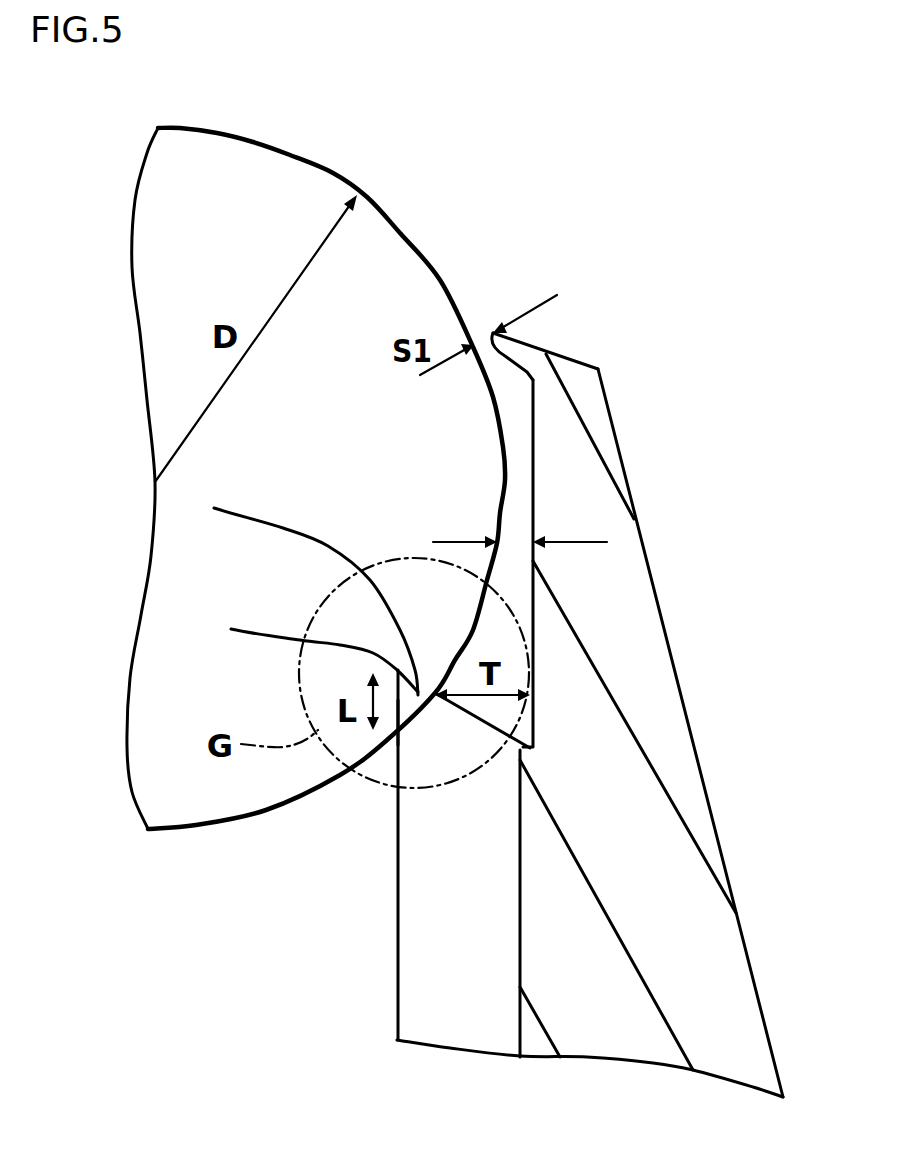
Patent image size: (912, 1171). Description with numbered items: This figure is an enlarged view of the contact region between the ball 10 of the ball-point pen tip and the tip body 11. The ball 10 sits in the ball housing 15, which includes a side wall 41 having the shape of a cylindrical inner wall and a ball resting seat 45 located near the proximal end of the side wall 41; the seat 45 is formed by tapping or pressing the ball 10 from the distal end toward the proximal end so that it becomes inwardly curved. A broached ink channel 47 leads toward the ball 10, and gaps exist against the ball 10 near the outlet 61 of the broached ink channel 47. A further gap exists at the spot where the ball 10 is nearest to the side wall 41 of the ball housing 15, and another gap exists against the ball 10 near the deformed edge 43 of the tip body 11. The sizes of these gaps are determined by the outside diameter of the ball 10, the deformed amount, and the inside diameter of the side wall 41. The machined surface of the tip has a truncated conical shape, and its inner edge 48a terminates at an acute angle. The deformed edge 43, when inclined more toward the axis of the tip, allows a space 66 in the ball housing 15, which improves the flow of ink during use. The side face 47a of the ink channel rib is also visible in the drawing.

The ball 10 is at (240, 175).
The tip body 11 is at (712, 935).
The ball housing 15 is at (516, 506).
The side wall 41 is at (534, 452).
The deformed edge 43 is at (520, 342).
The ball resting seat 45 is at (408, 714).
The broached ink channel 47 is at (423, 967).
The side face of rib 47a is at (520, 960).
The inner edge of machined surface 48a is at (231, 629).
The outlet of broached ink channel 61 is at (468, 727).
The space 66 is at (214, 508).